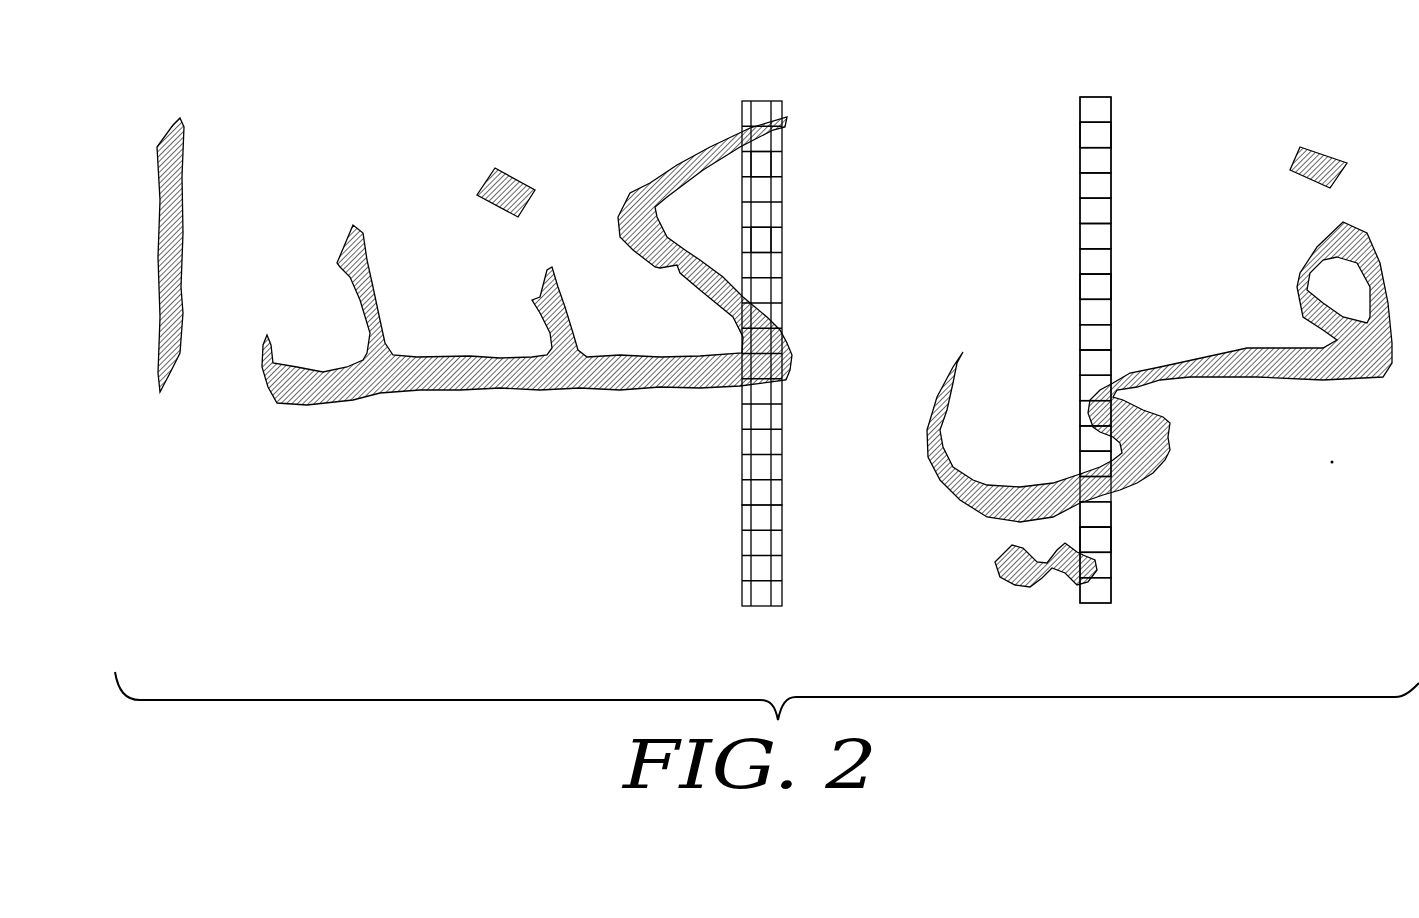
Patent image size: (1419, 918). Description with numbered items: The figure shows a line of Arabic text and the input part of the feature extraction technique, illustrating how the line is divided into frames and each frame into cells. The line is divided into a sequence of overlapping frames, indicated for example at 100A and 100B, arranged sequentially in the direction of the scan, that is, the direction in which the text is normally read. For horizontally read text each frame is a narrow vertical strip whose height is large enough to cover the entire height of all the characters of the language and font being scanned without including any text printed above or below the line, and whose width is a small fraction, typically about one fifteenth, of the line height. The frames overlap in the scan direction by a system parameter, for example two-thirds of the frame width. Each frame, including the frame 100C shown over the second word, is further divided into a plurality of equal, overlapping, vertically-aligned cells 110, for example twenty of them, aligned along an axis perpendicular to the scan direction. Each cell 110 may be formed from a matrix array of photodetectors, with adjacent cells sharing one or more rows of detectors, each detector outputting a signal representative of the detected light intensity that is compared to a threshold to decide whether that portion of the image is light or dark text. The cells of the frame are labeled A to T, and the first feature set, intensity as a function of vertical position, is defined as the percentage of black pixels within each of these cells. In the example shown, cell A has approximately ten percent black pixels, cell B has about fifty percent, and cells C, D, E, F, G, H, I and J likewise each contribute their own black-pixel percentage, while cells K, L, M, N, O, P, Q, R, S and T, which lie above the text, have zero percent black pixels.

The frame 100A is at (782, 97).
The frame 100B is at (782, 521).
The template column 100C is at (1097, 97).
The cells 110 is at (765, 168).
The cell A is at (1112, 593).
The cell B is at (1112, 565).
The cell C is at (1112, 540).
The cell D is at (1085, 513).
The cell E is at (1112, 503).
The cell F is at (1095, 464).
The cell G is at (1095, 439).
The cell H is at (1095, 413).
The cell I is at (1095, 388).
The cell J is at (1095, 360).
The cell K is at (1102, 338).
The cell L is at (1102, 313).
The cell M is at (1085, 287).
The cell N is at (1102, 263).
The cell O is at (1102, 238).
The cell P is at (1102, 213).
The cell Q is at (1102, 188).
The cell R is at (1102, 163).
The cell S is at (1085, 138).
The cell T is at (1102, 111).